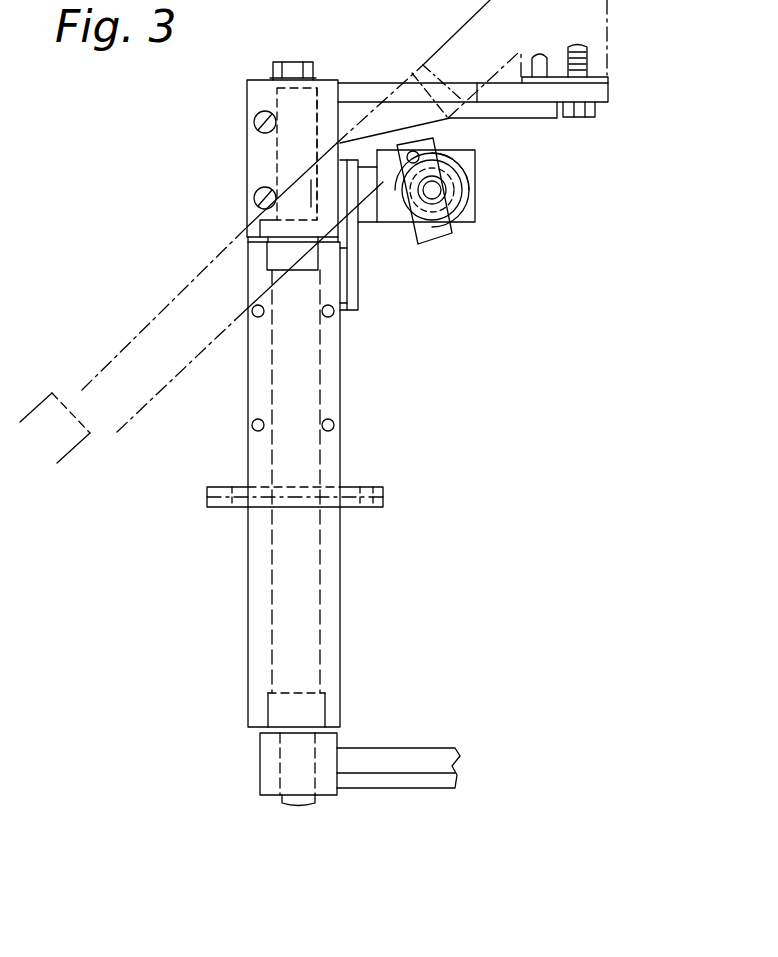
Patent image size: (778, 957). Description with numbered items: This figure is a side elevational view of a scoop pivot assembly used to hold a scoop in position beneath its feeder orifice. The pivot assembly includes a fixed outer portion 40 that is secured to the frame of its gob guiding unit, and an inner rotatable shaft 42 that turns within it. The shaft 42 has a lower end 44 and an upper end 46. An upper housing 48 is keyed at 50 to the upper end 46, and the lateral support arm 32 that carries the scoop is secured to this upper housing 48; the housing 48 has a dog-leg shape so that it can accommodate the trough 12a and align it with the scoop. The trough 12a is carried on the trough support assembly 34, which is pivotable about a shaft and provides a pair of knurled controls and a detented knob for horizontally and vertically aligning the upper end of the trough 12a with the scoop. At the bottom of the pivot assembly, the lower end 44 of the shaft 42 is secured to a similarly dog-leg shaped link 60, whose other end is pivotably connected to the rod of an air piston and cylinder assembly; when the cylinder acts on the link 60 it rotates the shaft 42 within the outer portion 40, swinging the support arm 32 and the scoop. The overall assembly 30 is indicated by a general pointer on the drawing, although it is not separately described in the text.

The trough 12a is at (185, 323).
The clamp assembly 30 is at (358, 388).
The lateral support arm 32 is at (538, 107).
The trough support assembly 34 is at (482, 210).
The fixed outer portion 40 is at (343, 462).
The inner rotatable shaft 42 is at (272, 553).
The lower end 44 is at (282, 757).
The upper end 46 is at (278, 93).
The upper housing 48 is at (257, 158).
The key 50 is at (337, 100).
The link 60 is at (427, 758).